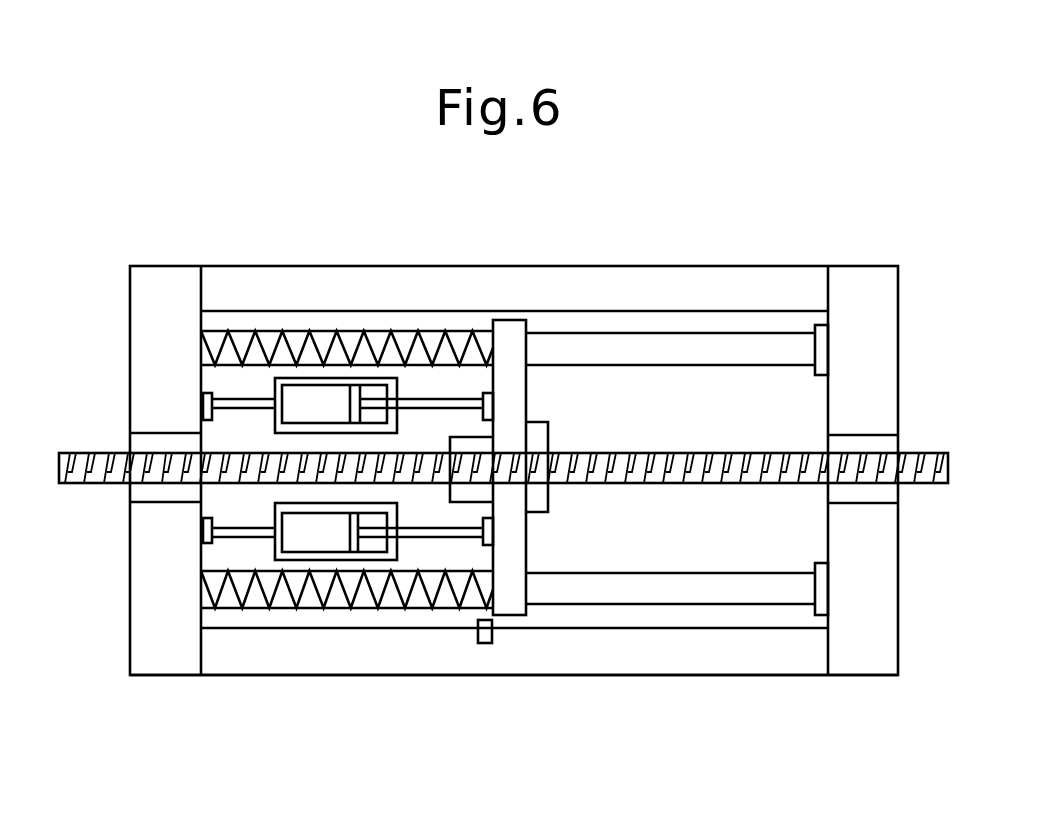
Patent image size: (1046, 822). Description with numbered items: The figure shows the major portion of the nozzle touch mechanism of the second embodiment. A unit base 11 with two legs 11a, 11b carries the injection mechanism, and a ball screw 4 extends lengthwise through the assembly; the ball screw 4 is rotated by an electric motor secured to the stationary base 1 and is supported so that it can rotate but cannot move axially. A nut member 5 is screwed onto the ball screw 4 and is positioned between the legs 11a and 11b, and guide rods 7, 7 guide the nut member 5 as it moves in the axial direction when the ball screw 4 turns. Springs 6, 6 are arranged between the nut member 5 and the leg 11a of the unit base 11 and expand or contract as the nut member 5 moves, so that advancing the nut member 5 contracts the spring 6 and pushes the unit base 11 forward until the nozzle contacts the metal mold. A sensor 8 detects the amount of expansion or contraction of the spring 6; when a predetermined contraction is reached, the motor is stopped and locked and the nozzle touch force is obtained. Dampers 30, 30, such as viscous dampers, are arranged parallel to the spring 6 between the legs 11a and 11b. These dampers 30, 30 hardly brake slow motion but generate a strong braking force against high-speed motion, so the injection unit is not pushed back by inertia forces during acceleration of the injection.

The base 1 is at (678, 675).
The ball screw 4 is at (755, 483).
The nut member 5 is at (518, 330).
The spring 6 is at (432, 332).
The guide rod 7 is at (680, 345).
The sensor 8 is at (487, 637).
The unit base 11 is at (354, 278).
The leg of the unit base 11a is at (157, 278).
The leg of the unit base 11b is at (862, 282).
The damper 30 is at (290, 388).